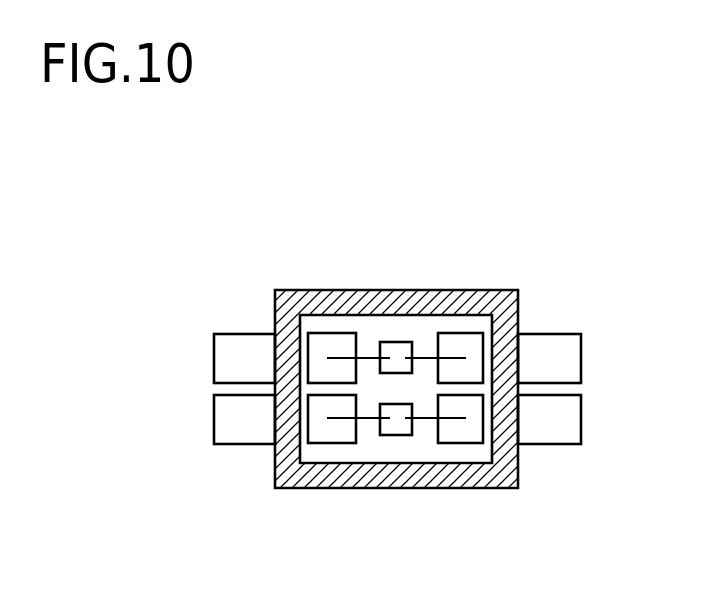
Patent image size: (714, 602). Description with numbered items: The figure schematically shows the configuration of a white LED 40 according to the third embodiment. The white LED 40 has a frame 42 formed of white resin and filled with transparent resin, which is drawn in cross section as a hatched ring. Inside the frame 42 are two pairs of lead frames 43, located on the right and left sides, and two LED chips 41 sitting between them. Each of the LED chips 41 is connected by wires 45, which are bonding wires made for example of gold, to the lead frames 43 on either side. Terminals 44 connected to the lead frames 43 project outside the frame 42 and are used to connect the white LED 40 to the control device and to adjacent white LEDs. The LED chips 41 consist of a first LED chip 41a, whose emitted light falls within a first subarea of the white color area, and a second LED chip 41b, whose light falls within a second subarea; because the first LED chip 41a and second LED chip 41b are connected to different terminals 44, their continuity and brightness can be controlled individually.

The white LED 40 is at (524, 249).
The LED chips 41 is at (517, 495).
The first LED chip 41a is at (412, 366).
The second LED chip 41b is at (412, 427).
The frame 42 is at (293, 290).
The lead frames 43 is at (461, 333).
The terminals 44 is at (551, 333).
The wires 45 is at (370, 355).